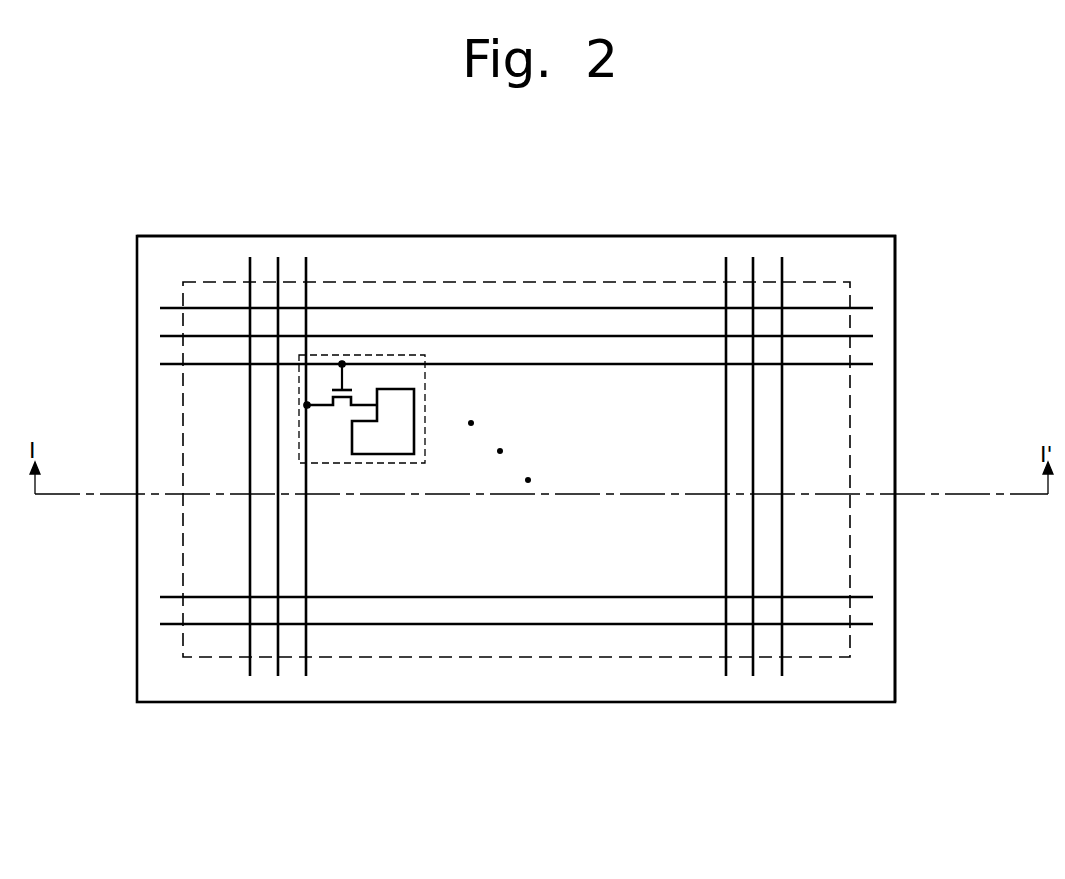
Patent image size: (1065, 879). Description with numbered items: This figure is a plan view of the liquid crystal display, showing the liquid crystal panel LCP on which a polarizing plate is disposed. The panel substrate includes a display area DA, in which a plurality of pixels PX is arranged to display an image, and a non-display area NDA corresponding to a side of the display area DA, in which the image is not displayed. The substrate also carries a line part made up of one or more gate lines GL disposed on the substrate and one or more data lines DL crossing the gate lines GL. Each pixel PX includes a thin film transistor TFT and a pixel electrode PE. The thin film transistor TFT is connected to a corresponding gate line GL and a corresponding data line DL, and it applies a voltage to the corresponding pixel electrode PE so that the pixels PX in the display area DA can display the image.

The liquid crystal panel LCP is at (798, 203).
The non-display area NDA is at (886, 408).
The display area DA is at (840, 457).
The gate line GL is at (530, 597).
The data line DL is at (278, 545).
The pixel PX is at (358, 464).
The thin film transistor TFT is at (352, 388).
The pixel electrode PE is at (402, 443).